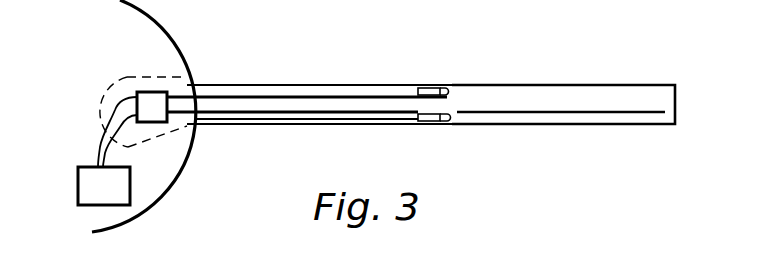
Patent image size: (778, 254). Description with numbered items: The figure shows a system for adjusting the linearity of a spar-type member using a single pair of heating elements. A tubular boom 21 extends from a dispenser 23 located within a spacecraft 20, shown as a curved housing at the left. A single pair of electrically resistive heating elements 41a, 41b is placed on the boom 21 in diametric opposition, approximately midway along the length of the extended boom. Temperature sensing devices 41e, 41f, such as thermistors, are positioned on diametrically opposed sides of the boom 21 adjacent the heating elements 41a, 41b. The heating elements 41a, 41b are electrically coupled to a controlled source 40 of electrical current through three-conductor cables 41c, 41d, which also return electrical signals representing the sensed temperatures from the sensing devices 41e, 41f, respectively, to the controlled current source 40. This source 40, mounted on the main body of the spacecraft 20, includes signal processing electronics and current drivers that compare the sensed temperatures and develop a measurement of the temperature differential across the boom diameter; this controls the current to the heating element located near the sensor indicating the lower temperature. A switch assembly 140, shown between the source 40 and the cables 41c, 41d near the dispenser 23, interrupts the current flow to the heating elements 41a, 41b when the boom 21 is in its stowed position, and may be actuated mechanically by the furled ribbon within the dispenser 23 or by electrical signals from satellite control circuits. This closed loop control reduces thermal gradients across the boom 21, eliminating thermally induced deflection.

The spacecraft 20 is at (163, 19).
The tubular boom 21 is at (530, 85).
The dispenser 23 is at (172, 77).
The controlled source of electrical current 40 is at (78, 192).
The switch assembly 140 is at (137, 92).
The heating element 41a is at (424, 88).
The heating element 41b is at (420, 123).
The three-conductor cable 41c is at (332, 73).
The three-conductor cable 41d is at (318, 125).
The temperature sensing device 41e is at (445, 88).
The temperature sensing device 41f is at (448, 124).